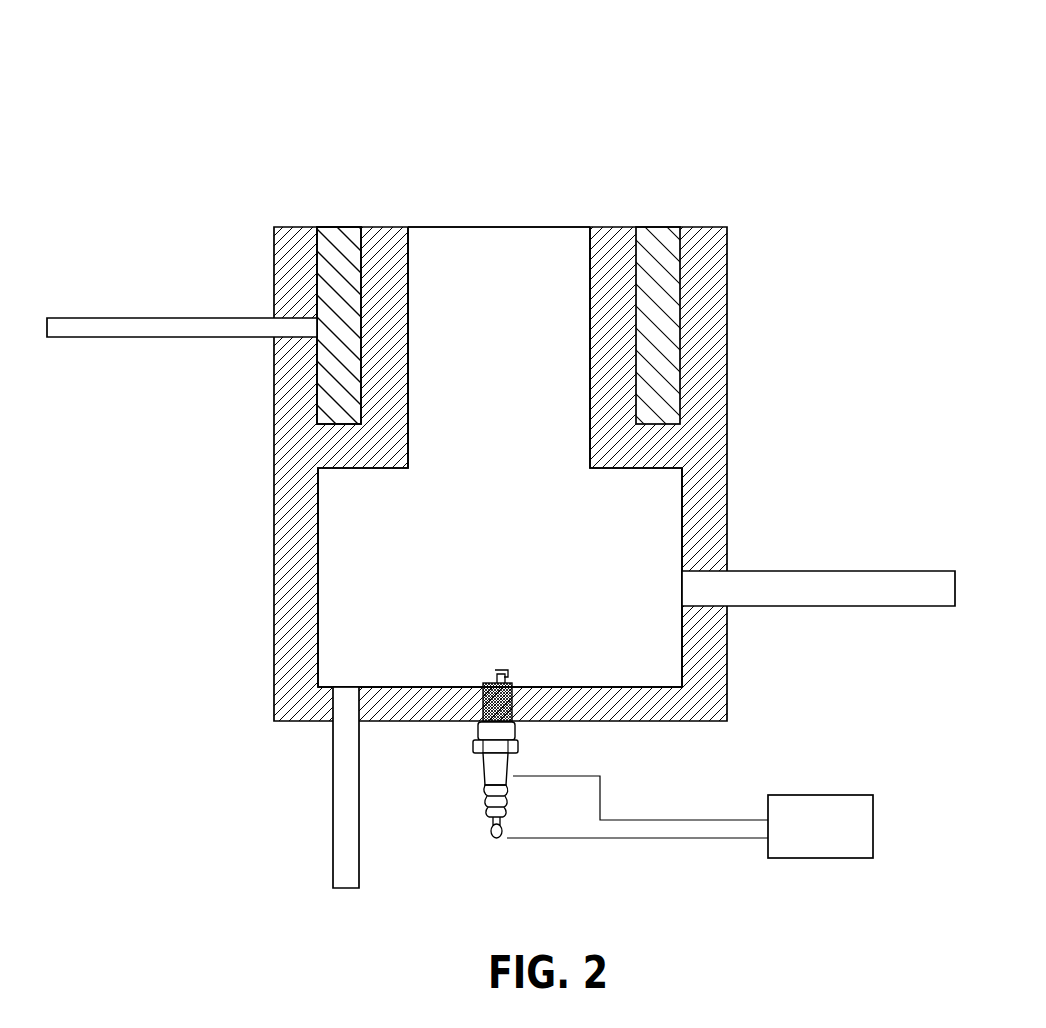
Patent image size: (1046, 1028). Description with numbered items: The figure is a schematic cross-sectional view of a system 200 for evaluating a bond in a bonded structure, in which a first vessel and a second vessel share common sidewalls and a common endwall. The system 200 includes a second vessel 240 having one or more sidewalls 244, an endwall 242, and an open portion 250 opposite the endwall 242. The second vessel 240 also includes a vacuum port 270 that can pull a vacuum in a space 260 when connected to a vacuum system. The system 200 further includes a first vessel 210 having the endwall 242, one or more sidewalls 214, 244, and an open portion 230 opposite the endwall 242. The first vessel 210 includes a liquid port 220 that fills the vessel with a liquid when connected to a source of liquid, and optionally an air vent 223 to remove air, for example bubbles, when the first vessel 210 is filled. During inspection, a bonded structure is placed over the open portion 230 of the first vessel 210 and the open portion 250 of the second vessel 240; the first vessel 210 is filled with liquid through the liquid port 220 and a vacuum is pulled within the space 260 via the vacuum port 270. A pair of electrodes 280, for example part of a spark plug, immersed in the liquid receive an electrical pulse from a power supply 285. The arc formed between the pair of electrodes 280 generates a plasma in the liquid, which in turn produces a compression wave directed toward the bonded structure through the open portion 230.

The system 200 is at (440, 62).
The first vessel 210 is at (612, 227).
The sidewall 214 is at (588, 398).
The liquid port 220 is at (878, 570).
The air vent 223 is at (333, 852).
The open portion 230 is at (460, 227).
The second vessel 240 is at (705, 227).
The endwall 242 is at (408, 687).
The sidewall 244 is at (273, 590).
The open portion 250 is at (336, 227).
The space 260 is at (328, 285).
The vacuum port 270 is at (105, 318).
The pair of electrodes 280 is at (510, 675).
The power supply 285 is at (690, 817).